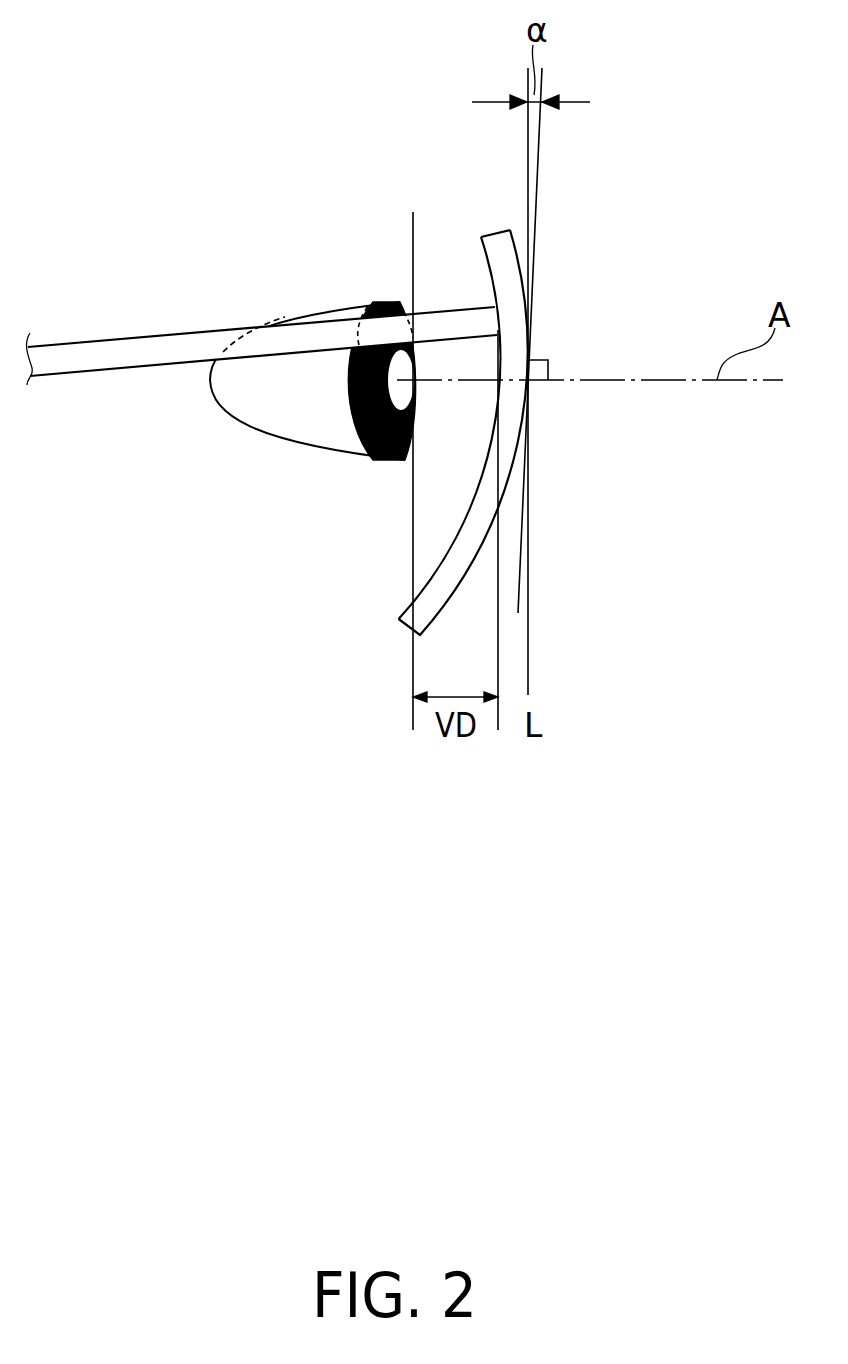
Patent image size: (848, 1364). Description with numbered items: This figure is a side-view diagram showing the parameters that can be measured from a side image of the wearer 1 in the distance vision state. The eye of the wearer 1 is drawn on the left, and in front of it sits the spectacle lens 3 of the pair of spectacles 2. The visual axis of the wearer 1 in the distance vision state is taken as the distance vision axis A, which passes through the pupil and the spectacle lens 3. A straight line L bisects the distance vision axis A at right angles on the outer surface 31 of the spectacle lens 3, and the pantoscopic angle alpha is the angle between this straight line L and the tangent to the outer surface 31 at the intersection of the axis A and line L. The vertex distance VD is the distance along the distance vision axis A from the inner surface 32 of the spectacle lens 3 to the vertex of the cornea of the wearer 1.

The wearer 1 is at (287, 453).
The pair of spectacles 2 is at (467, 378).
The spectacle lens 3 is at (467, 455).
The outer surface 31 is at (423, 634).
The inner surface 32 is at (437, 557).